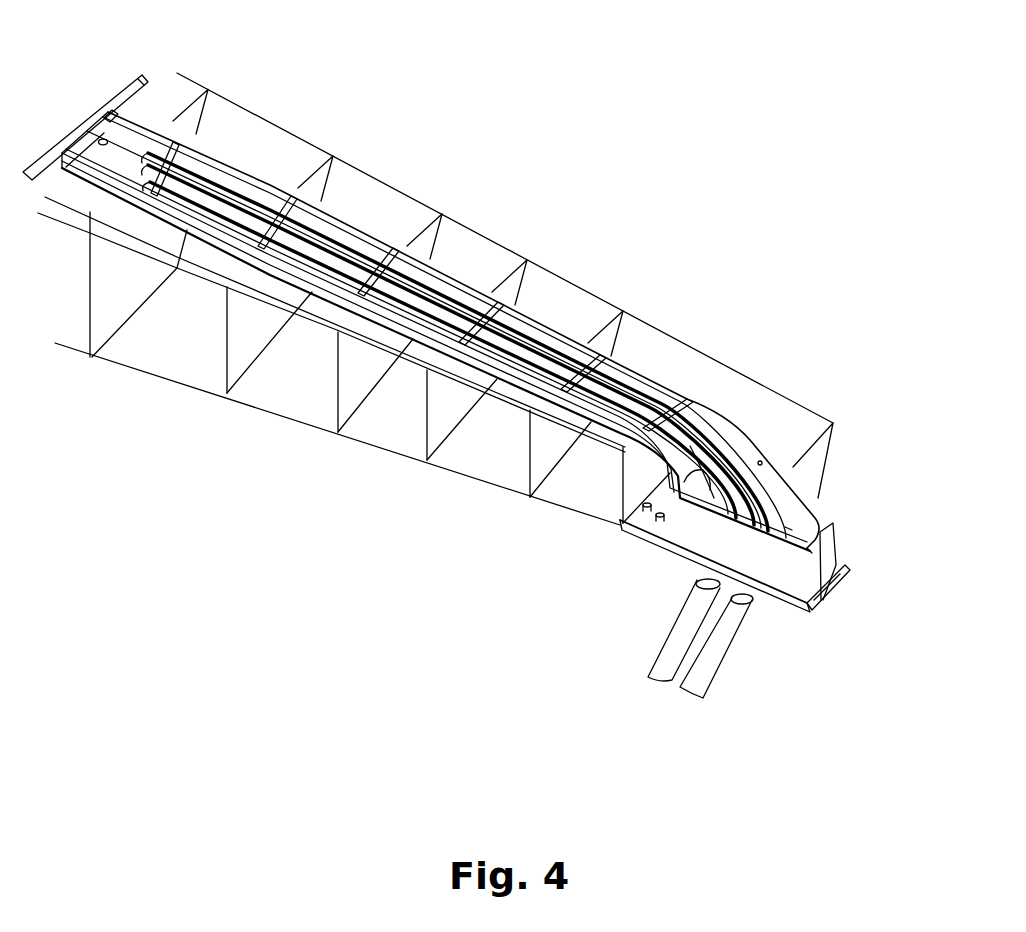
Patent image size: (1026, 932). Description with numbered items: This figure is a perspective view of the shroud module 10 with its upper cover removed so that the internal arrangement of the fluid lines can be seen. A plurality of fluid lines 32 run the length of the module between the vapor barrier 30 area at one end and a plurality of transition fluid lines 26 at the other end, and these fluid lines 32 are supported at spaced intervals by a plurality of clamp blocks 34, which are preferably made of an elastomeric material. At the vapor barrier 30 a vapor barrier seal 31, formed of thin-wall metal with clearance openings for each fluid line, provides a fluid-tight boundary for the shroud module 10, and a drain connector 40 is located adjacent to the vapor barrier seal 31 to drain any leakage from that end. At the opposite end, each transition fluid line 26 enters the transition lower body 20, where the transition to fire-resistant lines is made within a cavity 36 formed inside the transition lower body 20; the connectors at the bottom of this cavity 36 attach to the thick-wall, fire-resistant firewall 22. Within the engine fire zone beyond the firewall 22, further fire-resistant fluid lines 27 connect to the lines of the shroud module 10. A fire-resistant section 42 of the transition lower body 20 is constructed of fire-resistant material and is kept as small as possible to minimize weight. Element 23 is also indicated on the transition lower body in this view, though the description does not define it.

The shroud module 10 is at (546, 214).
The transition lower body 20 is at (823, 520).
The firewall 22 is at (672, 551).
The housing end wall 23 is at (815, 565).
The transition fluid lines 26 is at (738, 490).
The fire-resistant fluid lines 27 is at (701, 679).
The vapor barrier 30 is at (138, 78).
The vapor barrier seal 31 is at (117, 112).
The fluid lines 32 is at (347, 254).
The clamp blocks 34 is at (180, 146).
The cavity 36 is at (785, 527).
The drain connector 40 is at (102, 140).
The fire-resistant section 42 is at (764, 577).